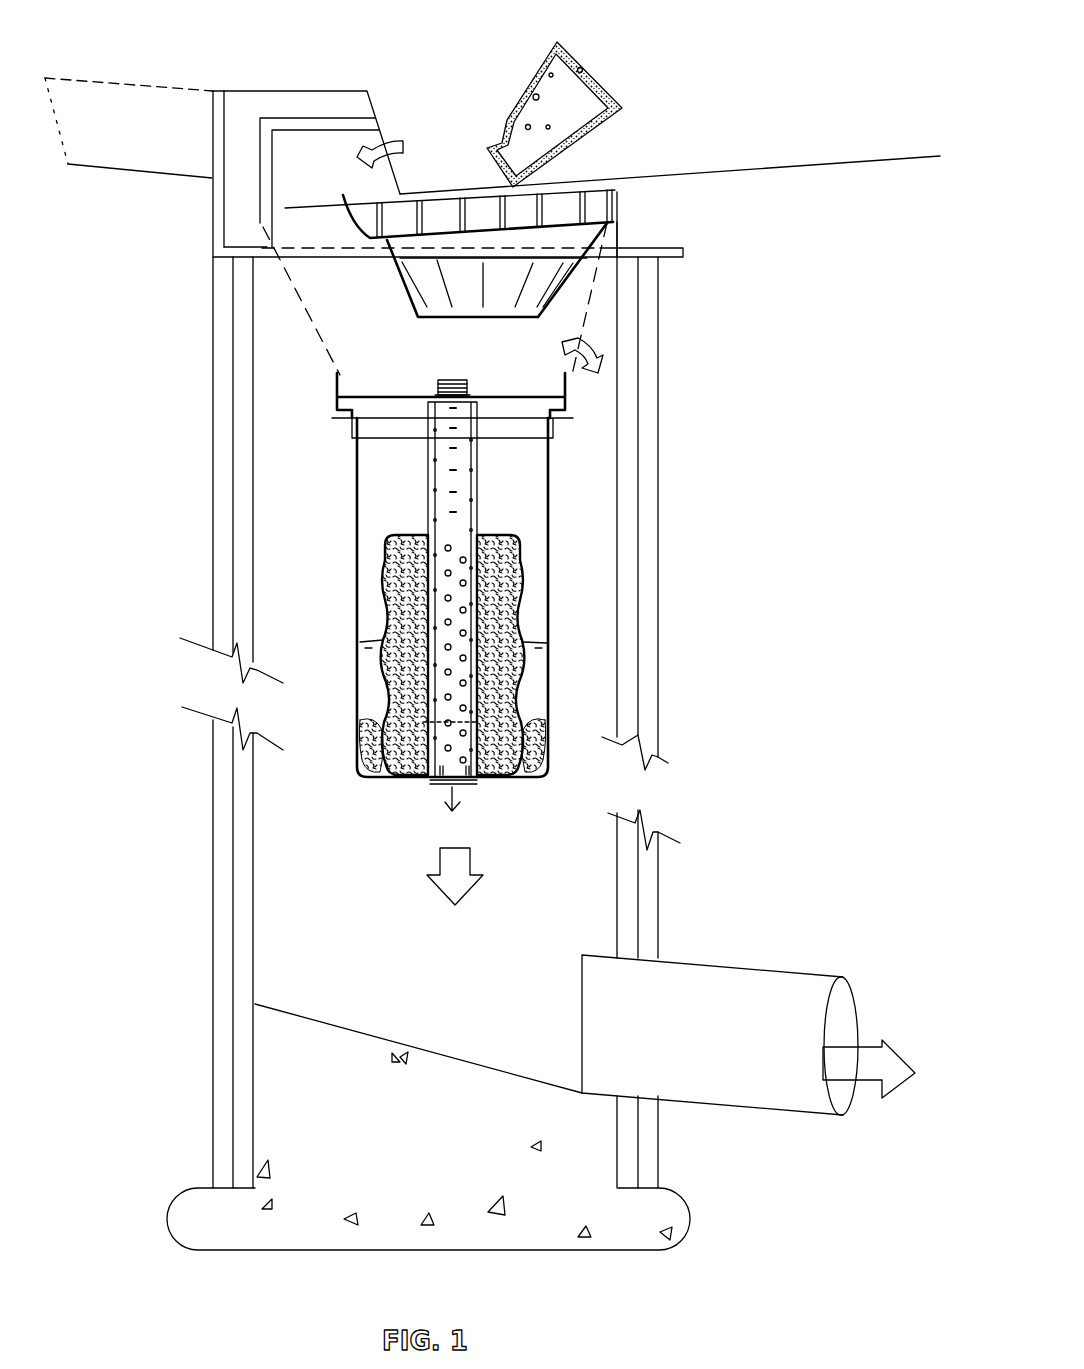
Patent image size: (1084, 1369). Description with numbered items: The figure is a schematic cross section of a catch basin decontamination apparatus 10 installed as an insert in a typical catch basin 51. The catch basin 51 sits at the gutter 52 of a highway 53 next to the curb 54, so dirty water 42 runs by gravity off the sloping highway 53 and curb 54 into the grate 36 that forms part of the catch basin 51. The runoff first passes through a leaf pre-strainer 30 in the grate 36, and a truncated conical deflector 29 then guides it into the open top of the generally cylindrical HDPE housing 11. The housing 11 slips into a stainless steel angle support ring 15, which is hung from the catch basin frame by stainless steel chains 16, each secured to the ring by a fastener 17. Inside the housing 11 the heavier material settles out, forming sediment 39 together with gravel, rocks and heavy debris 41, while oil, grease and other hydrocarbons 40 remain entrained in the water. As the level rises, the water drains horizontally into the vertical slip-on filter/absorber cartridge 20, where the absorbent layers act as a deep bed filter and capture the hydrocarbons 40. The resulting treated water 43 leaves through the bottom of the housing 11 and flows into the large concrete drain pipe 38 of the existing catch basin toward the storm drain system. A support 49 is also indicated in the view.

The catch basin decontamination apparatus 10 is at (851, 231).
The housing 11 is at (553, 507).
The angle support ring 15 is at (560, 425).
The chains 16 is at (588, 316).
The fastener 17 is at (613, 213).
The filter/absorber cartridge 20 is at (520, 611).
The deflector 29 is at (587, 275).
The leaf pre-strainer 30 is at (513, 187).
The grate 36 is at (570, 193).
The concrete drain pipe 38 is at (618, 917).
The sediment 39 is at (523, 733).
The oil, grease and other hydrocarbons 40 is at (537, 675).
The gravel, rocks and heavy debris 41 is at (573, 93).
The dirty water 42 is at (617, 395).
The treated water 43 is at (457, 786).
The support for sump tank and sump pump 49 is at (597, 352).
The catch basin 51 is at (658, 420).
The gutter 52 is at (398, 187).
The highway 53 is at (560, 197).
The curb 54 is at (123, 97).